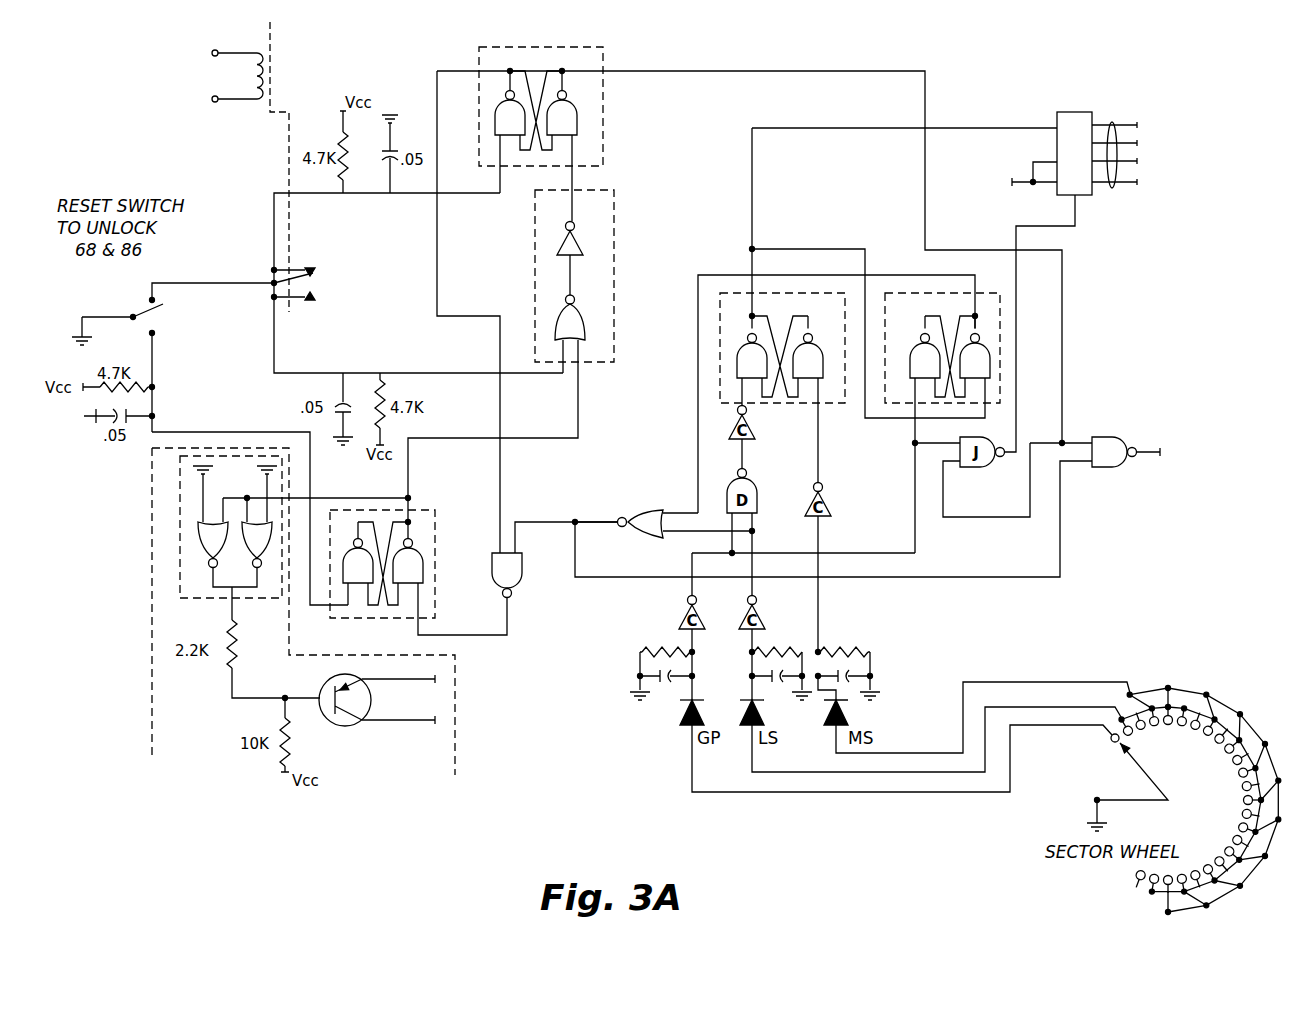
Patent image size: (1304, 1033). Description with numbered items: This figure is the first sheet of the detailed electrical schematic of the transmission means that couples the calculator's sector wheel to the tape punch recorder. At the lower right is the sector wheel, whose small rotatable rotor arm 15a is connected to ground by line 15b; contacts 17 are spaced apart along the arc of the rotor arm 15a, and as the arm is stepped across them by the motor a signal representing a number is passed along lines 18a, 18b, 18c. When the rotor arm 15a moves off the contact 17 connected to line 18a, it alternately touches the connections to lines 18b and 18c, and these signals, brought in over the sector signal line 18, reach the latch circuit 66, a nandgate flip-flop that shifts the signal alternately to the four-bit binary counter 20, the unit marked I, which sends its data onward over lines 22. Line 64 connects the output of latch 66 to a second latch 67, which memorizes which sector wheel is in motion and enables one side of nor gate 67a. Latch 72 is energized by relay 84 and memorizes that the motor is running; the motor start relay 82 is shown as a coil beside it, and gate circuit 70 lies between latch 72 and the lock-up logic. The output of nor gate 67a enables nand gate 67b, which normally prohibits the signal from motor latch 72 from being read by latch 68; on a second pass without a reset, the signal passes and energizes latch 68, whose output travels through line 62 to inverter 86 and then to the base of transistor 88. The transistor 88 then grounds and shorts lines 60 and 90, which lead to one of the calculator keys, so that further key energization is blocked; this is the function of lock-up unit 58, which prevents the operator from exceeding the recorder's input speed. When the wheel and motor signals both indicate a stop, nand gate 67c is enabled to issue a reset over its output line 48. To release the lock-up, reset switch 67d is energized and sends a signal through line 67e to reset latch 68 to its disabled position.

The motor start relay 82 is at (263, 73).
The relay 84 is at (316, 281).
The latch 72 is at (604, 62).
The gate circuit 70 is at (614, 192).
The sector signal line 18 is at (978, 128).
The binary counter 20 is at (1068, 112).
The lines 22 is at (1112, 122).
The line 64 is at (806, 249).
The latch circuit 66 is at (830, 403).
The second latch 67 is at (1000, 385).
The nor gate 67a is at (646, 510).
The nand gate 67b is at (522, 584).
The nand gate 67c is at (1106, 437).
The reset switch 67d is at (160, 321).
The line 67e is at (213, 432).
The output line 48 is at (1140, 456).
The line 62 is at (358, 482).
The latch 68 is at (427, 510).
The inverter 86 is at (200, 599).
The lock-up unit 58 is at (152, 669).
The transistor 88 is at (323, 688).
The line 90 is at (396, 680).
The line 60 is at (420, 722).
The line 18a is at (828, 792).
The line 18b is at (940, 772).
The line 18c is at (903, 746).
The contacts 17 is at (1116, 745).
The rotor arm 15a is at (1156, 783).
The line 15b is at (1117, 800).